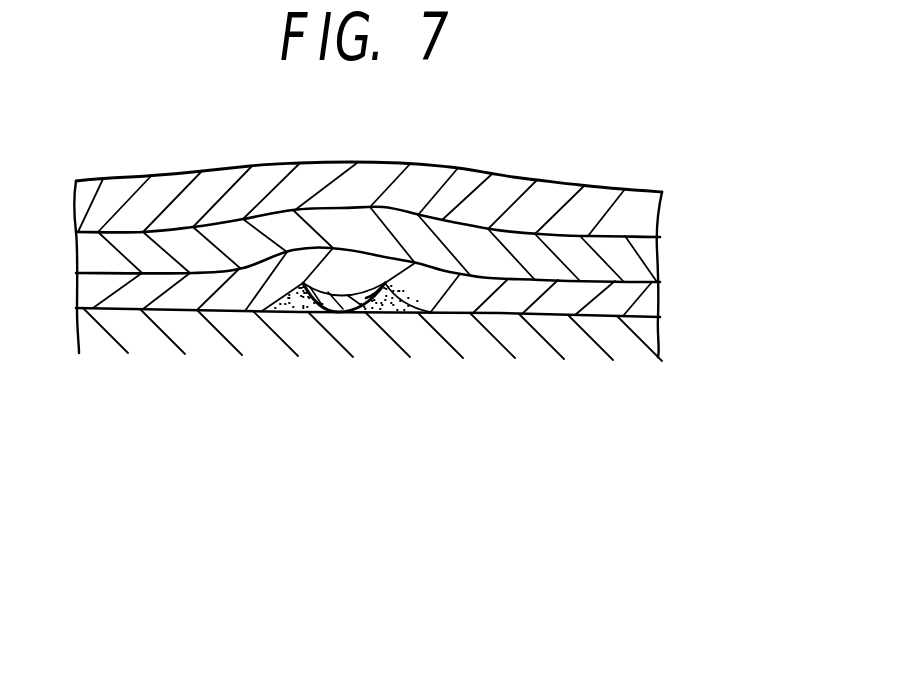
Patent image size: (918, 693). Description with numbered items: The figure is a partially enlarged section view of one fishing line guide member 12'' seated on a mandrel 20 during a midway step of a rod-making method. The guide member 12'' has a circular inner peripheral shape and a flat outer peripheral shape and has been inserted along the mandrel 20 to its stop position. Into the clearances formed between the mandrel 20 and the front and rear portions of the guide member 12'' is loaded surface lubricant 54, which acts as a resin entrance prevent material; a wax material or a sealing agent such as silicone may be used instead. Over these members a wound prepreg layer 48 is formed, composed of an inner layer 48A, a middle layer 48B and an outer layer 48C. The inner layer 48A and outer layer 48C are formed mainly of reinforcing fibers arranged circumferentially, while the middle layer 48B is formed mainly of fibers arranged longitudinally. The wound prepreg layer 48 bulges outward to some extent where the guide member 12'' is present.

The fishing line guide member 12'' is at (352, 207).
The mandrel 20 is at (373, 417).
The wound prepreg layer 48 is at (443, 239).
The inner layer 48A is at (423, 282).
The middle layer 48B is at (630, 265).
The outer layer 48C is at (634, 211).
The loaded surface lubricant 54 is at (298, 313).